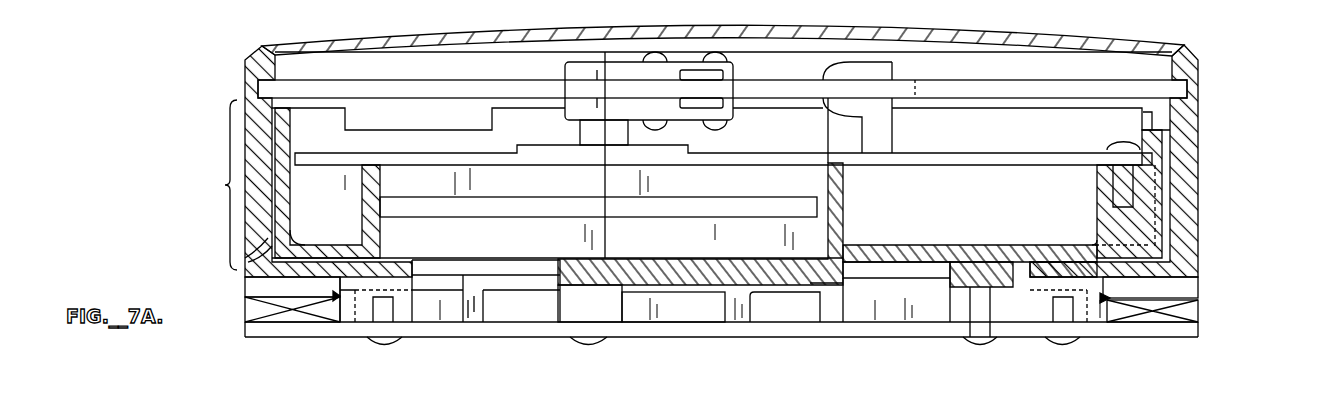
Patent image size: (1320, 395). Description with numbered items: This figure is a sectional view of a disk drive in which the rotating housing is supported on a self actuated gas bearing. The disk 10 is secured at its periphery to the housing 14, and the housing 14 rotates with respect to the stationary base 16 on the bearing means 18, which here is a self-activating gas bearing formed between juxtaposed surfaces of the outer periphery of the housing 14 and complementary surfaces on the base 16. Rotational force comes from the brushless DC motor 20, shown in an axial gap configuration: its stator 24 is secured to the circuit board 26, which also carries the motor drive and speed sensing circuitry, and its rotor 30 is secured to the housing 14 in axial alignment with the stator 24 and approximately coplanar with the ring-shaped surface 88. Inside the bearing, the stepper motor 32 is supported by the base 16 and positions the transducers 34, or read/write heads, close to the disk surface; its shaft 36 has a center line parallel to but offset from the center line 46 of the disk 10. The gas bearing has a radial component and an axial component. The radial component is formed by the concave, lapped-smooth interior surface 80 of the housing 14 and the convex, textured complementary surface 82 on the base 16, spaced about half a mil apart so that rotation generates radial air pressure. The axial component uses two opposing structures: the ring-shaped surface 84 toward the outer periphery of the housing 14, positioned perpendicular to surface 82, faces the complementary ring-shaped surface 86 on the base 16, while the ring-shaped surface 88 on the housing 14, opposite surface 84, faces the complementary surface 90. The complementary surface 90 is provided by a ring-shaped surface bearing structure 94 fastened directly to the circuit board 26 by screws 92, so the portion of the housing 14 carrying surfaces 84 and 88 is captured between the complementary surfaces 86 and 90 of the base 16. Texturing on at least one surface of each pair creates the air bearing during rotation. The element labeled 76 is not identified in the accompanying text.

The disk 10 is at (990, 90).
The housing 14 is at (220, 185).
The base 16 is at (350, 252).
The bearings 18 is at (1136, 267).
The brushless DC motor 20 is at (1250, 298).
The stator 24 is at (1190, 314).
The circuit board 26 is at (508, 339).
The rotor 30 is at (1188, 290).
The stepper motor 32 is at (755, 187).
The transducers 34 is at (724, 103).
The shaft 36 is at (590, 135).
The center line 46 is at (578, 74).
The post 76 is at (880, 74).
The interior surface 80 is at (1180, 152).
The complementary surface 82 is at (290, 190).
The ring-shaped surface 84 is at (262, 288).
The complementary ring-shaped surface 86 is at (319, 255).
The ring-shaped surface 88 is at (396, 270).
The complementary surface 90 is at (362, 280).
The screws 92 is at (385, 346).
The surface bearing structure 94 is at (518, 292).